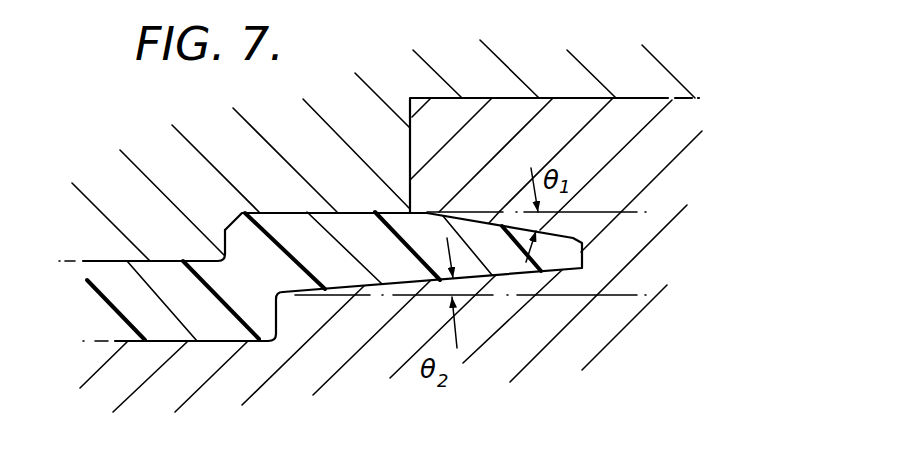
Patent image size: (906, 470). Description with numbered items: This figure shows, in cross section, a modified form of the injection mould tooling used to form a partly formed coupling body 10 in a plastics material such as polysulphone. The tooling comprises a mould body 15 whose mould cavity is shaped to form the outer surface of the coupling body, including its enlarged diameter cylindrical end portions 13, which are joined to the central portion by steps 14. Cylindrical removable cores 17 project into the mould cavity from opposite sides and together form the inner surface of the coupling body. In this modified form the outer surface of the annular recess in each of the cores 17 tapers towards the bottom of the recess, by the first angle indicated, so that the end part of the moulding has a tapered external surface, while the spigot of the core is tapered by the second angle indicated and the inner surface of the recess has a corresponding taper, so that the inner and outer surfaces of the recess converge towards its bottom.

The coupling body 10 is at (118, 287).
The enlarged diameter cylindrical end portions 13 is at (352, 228).
The steps 14 is at (250, 302).
The mould body 15 is at (208, 130).
The removable cores 17 is at (515, 110).